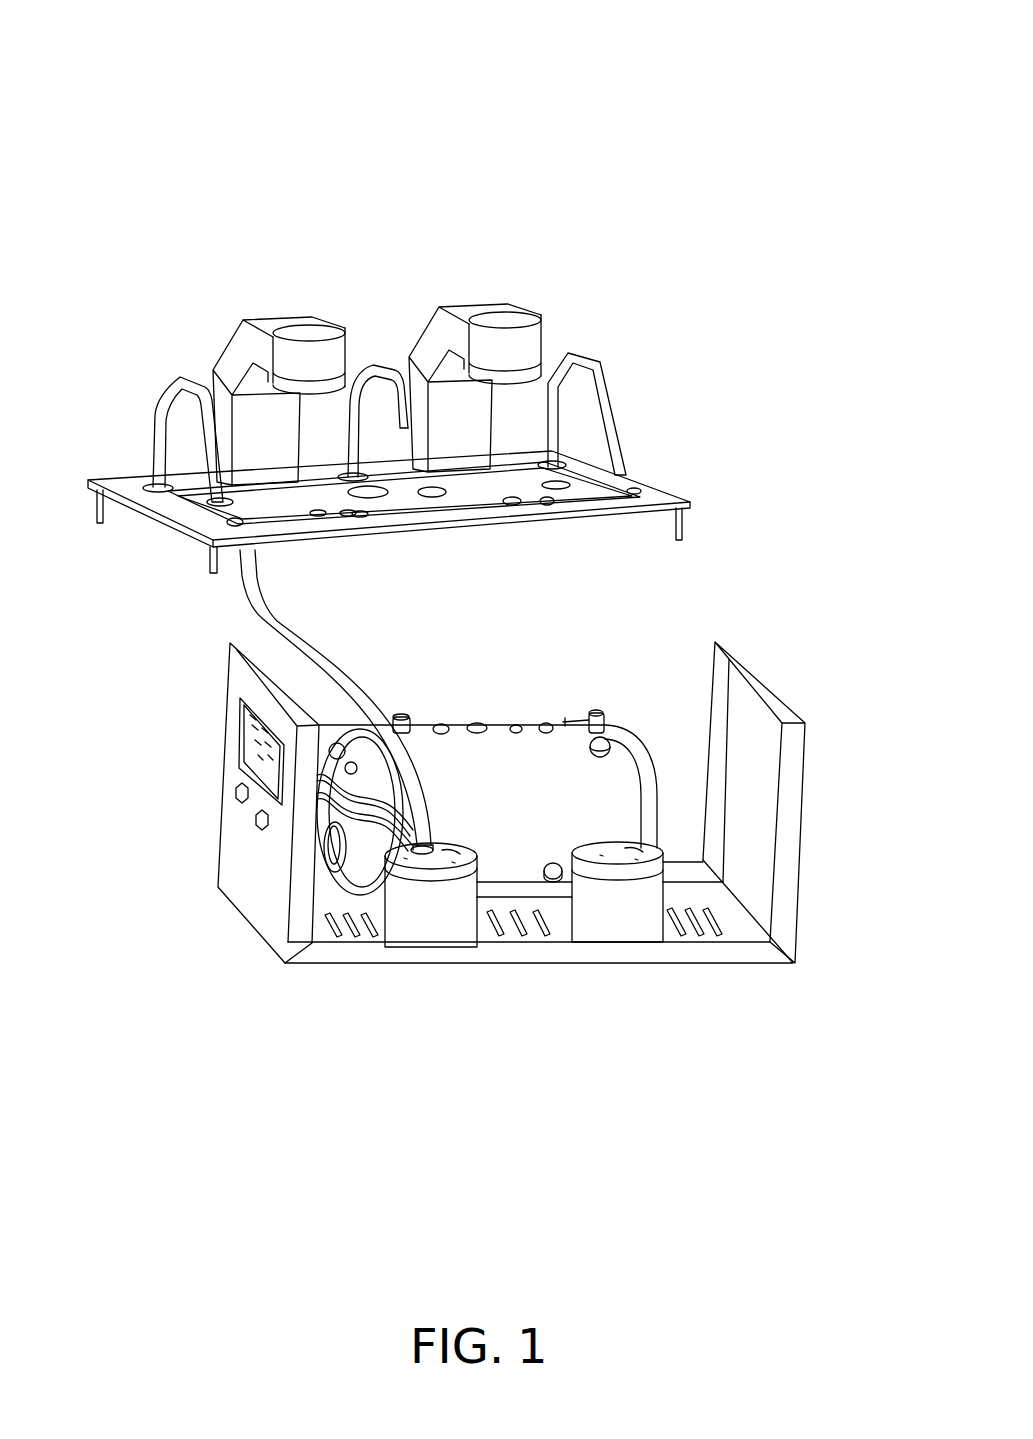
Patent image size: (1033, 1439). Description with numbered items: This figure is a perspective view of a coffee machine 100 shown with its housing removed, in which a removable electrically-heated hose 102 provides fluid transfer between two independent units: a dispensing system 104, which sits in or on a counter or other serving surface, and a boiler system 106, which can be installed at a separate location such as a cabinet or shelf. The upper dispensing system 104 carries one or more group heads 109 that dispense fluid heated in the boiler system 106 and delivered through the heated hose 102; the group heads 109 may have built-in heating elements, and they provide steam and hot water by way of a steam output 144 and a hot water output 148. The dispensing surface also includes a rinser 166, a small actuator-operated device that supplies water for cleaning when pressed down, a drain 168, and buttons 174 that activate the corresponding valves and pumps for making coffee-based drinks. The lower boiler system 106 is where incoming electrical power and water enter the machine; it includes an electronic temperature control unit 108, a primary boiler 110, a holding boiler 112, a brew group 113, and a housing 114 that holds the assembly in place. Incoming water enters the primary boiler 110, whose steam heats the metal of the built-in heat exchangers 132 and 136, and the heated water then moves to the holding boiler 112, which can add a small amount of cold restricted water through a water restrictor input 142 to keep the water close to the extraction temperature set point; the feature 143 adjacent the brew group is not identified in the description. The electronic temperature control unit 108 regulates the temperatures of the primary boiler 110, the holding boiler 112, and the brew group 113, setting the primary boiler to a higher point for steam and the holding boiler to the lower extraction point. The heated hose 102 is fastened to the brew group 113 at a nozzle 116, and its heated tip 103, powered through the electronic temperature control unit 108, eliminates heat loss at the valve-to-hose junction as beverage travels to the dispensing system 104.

The coffee machine 100 is at (165, 58).
The heated hose 102 is at (338, 683).
The heated tip 103 is at (413, 860).
The dispensing system 104 is at (153, 323).
The boiler system 106 is at (847, 902).
The electronic temperature control unit 108 is at (250, 772).
The group head 109 is at (425, 340).
The primary boiler 110 is at (545, 740).
The holding boiler 112 is at (650, 918).
The brew group 113 is at (405, 918).
The housing 114 is at (160, 390).
The nozzle 116 is at (500, 913).
The heat exchanger 132 is at (426, 708).
The heat exchanger 136 is at (596, 710).
The water restrictor input 142 is at (644, 849).
The left container lid 143 is at (459, 846).
The steam output 144 is at (585, 343).
The hot water output 148 is at (382, 357).
The rinser 166 is at (420, 495).
The drain 168 is at (555, 487).
The buttons 174 is at (365, 519).